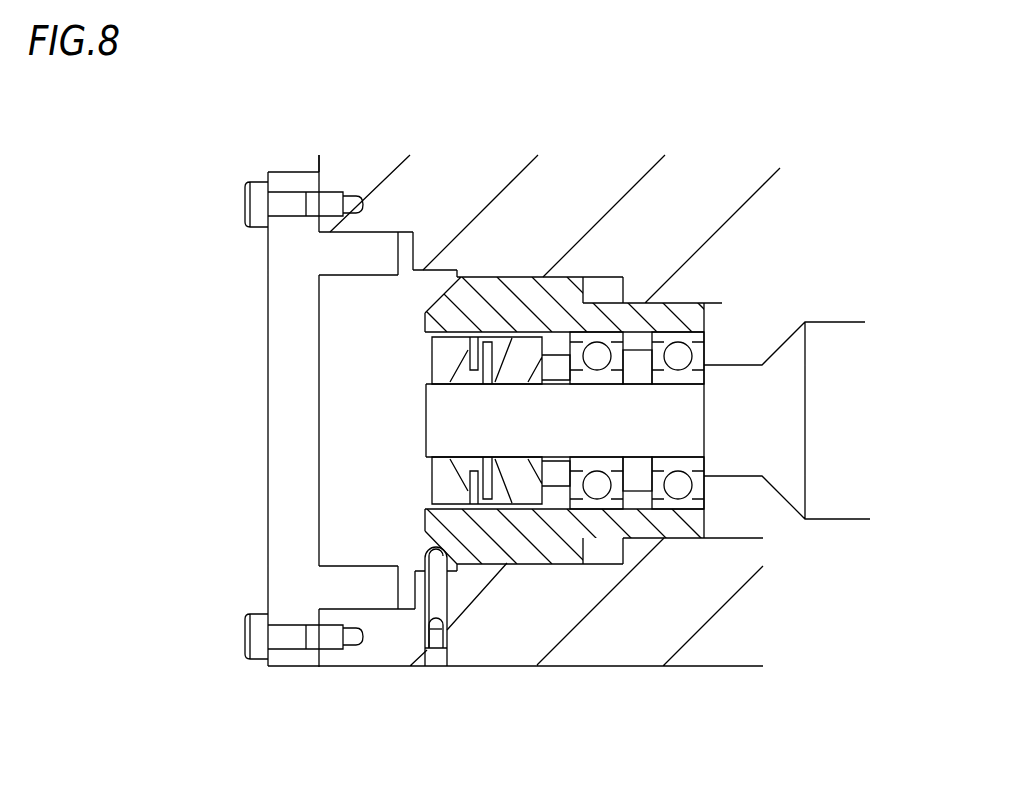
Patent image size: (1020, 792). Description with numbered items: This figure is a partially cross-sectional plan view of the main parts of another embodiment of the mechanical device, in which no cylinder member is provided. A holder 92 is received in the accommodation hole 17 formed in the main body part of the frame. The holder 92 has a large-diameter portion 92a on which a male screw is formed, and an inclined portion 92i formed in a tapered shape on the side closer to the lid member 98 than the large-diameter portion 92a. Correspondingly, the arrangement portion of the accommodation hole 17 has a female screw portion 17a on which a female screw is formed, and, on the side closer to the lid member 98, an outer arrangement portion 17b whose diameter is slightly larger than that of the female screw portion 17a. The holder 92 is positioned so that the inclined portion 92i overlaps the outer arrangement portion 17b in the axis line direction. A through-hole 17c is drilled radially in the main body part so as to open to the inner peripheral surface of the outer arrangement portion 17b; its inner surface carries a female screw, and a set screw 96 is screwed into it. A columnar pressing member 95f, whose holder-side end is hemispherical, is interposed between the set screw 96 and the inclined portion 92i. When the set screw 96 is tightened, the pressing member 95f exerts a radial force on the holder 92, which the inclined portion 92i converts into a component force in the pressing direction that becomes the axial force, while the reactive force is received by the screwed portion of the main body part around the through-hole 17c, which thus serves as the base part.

The holder 92 is at (598, 545).
The large-diameter portion 92a is at (550, 548).
The inclined portion 92i is at (460, 313).
The lid member 98 is at (266, 382).
The pressing member 95f is at (437, 582).
The set screw 96 is at (437, 628).
The accommodation hole 17 is at (745, 542).
The female screw portion 17a is at (494, 550).
The outer arrangement portion 17b is at (421, 577).
The through-hole (female screw hole) 17c is at (428, 652).